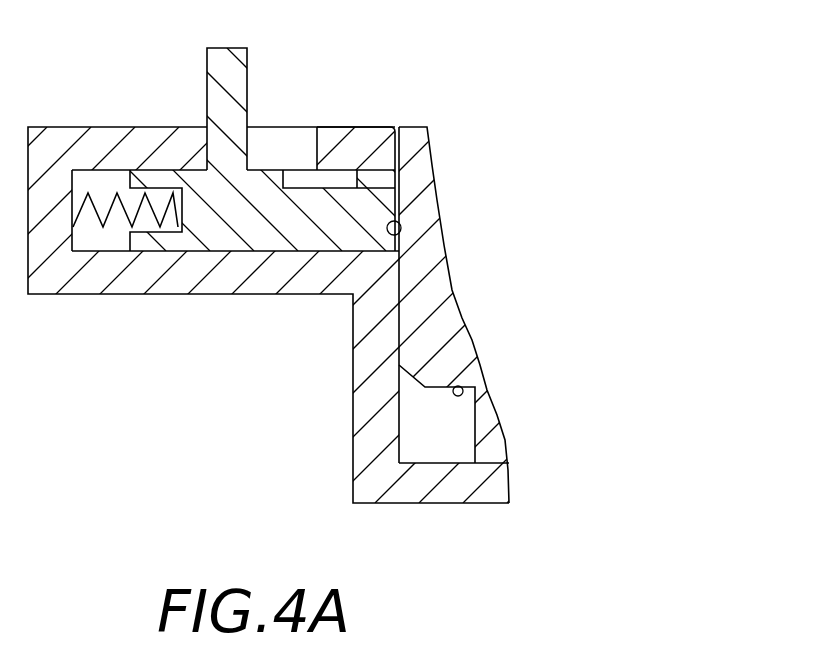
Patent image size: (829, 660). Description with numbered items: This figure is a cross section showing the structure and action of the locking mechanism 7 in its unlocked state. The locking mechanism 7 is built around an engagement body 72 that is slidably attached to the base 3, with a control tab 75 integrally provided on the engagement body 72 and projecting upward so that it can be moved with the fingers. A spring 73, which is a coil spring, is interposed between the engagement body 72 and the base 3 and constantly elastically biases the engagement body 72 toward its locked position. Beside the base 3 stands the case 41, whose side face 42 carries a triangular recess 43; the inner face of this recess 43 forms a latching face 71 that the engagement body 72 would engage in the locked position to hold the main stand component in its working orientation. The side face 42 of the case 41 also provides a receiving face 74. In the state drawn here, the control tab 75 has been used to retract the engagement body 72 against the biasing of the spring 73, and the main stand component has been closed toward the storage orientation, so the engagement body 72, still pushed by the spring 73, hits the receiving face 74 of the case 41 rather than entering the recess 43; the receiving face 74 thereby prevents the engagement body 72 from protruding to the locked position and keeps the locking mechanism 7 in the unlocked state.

The base 3 is at (98, 128).
The locking mechanism 7 is at (303, 227).
The case 41 is at (420, 160).
The side face 42 is at (384, 140).
The triangular recess 43 is at (443, 445).
The latching face 71 is at (462, 390).
The engagement body 72 is at (303, 240).
The spring 73 is at (128, 222).
The receiving face 74 is at (401, 228).
The control tab 75 is at (247, 77).